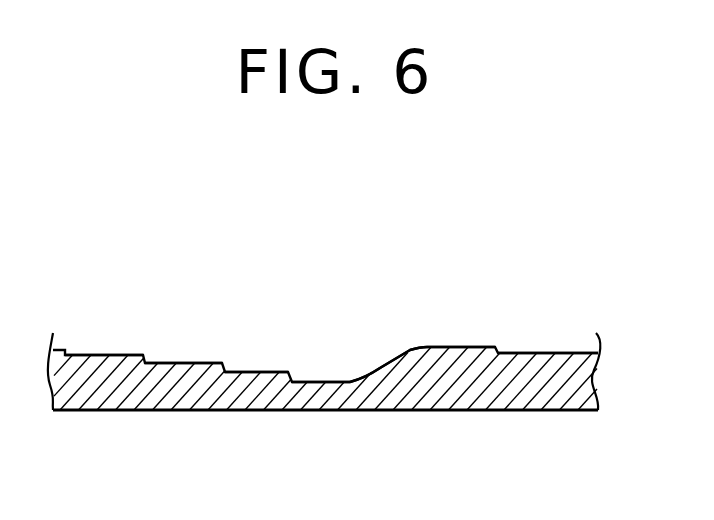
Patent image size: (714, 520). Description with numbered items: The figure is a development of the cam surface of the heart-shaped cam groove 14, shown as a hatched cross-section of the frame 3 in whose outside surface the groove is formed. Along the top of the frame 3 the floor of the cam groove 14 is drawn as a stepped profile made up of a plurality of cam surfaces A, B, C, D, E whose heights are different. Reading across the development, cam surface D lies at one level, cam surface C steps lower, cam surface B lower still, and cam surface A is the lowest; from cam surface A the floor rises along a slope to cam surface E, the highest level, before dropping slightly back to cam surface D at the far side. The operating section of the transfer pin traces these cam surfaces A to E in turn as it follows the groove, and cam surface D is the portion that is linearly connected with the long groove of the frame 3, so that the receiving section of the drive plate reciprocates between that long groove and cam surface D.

The frame 3 is at (201, 398).
The heart-shaped cam groove 14 is at (397, 363).
The cam surface A is at (321, 362).
The cam surface B is at (256, 353).
The cam surface C is at (183, 345).
The cam surface D is at (331, 334).
The cam surface E is at (461, 326).